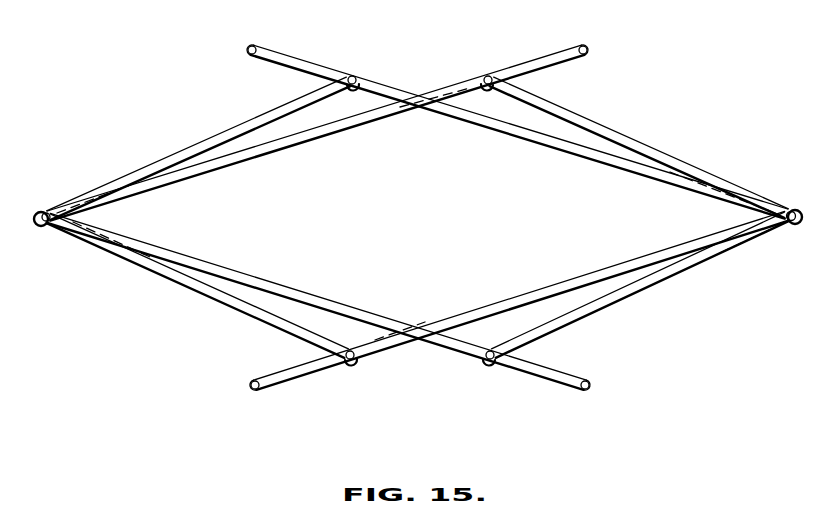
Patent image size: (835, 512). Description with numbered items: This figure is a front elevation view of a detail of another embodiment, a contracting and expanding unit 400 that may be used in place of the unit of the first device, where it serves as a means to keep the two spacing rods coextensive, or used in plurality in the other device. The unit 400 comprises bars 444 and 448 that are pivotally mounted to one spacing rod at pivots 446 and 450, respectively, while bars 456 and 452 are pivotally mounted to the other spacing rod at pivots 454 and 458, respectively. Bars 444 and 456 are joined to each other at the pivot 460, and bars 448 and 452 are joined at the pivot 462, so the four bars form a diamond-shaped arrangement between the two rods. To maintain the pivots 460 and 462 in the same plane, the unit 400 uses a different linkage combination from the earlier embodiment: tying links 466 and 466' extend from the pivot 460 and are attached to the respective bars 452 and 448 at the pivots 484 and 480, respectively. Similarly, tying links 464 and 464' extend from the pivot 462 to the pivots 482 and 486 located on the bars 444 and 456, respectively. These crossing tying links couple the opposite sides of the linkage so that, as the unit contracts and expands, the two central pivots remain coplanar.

The contracting and expanding unit 400 is at (658, 353).
The bar 444 is at (452, 73).
The pivot 446 is at (585, 47).
The bar 448 is at (305, 67).
The pivot 450 is at (255, 47).
The bar 452 is at (557, 287).
The pivot 454 is at (585, 390).
The bar 456 is at (300, 293).
The pivot 458 is at (253, 392).
The pivot 460 is at (47, 213).
The pivot 462 is at (792, 212).
The tying link 464 is at (639, 147).
The tying link 464' is at (640, 285).
The tying link 466 is at (198, 286).
The tying link 466' is at (199, 148).
The pivot 480 is at (353, 76).
The pivot 482 is at (488, 77).
The pivot 484 is at (345, 362).
The pivot 486 is at (492, 360).